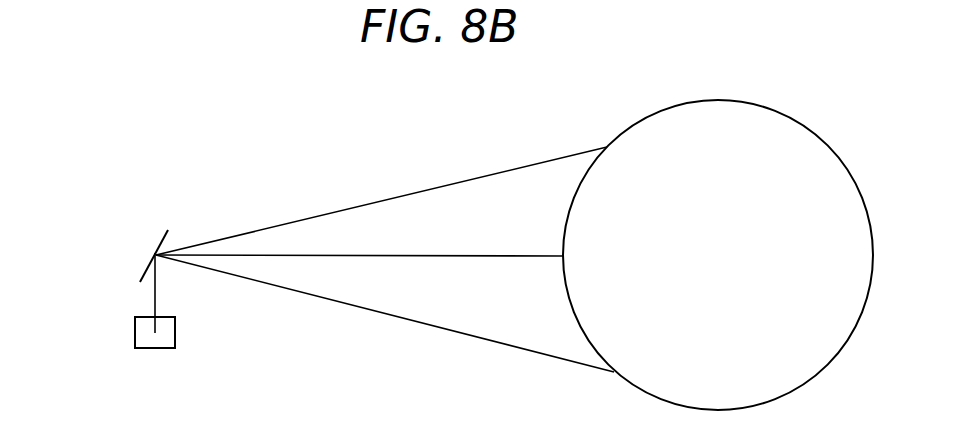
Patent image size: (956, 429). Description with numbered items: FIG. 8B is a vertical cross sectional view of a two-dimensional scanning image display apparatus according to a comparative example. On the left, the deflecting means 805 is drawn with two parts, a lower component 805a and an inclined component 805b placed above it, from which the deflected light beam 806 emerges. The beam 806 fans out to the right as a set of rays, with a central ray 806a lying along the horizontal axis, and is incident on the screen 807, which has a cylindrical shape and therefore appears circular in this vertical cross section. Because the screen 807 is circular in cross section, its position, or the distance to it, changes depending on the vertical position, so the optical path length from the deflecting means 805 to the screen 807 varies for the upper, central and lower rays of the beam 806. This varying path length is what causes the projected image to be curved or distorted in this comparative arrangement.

The deflecting means 805 is at (68, 208).
The light source 805a is at (147, 318).
The mirror 805b is at (155, 253).
The deflected light beam 806 is at (340, 212).
The central ray of light beam 806a is at (453, 255).
The screen 807 is at (710, 100).